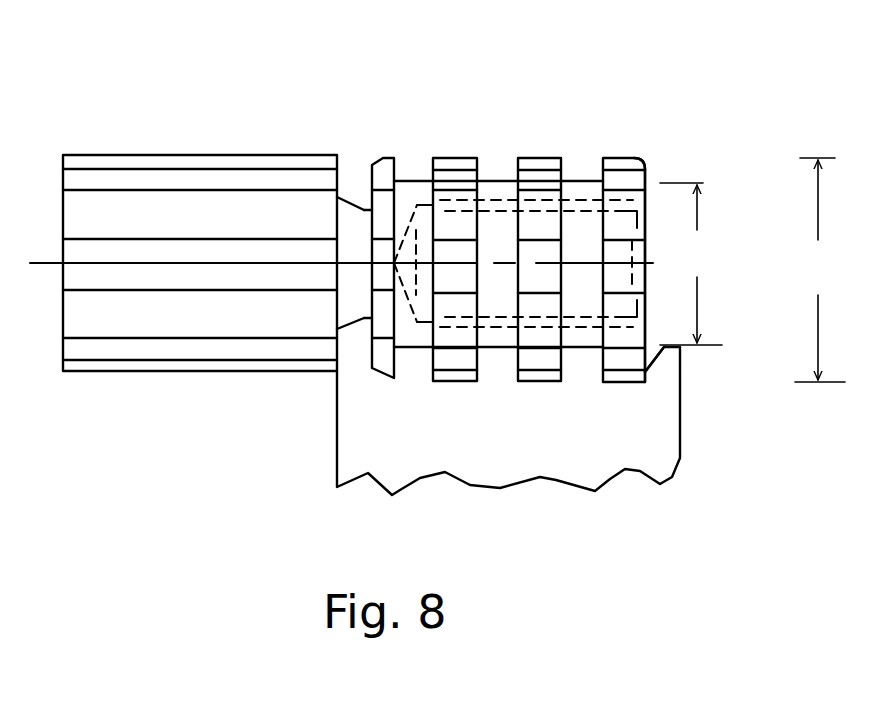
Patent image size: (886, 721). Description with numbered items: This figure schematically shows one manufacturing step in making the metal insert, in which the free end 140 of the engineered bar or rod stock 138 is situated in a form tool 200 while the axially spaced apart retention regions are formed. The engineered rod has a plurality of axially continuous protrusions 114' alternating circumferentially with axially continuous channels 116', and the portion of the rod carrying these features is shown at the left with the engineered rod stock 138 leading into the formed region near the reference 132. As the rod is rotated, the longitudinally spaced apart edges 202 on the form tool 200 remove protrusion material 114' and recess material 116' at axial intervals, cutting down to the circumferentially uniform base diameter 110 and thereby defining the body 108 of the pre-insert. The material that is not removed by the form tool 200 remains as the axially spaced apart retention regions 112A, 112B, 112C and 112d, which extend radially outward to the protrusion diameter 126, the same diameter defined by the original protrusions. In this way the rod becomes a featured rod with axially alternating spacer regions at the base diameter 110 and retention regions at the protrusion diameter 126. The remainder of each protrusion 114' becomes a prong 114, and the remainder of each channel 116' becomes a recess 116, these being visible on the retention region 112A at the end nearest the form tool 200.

The axially continuous protrusion 114' is at (200, 133).
The axially continuous channel 116' is at (200, 141).
The mating connector housing 132 is at (280, 156).
The engineered bar or rod stock 138 is at (190, 374).
The retention region 112d is at (385, 156).
The free end 140 is at (417, 108).
The retention region 112C is at (452, 157).
The body 108 is at (494, 181).
The retention region 112B is at (548, 157).
The retention region 112A is at (620, 157).
The prong 114 is at (740, 119).
The recess 116 is at (752, 241).
The base diameter 110 is at (700, 222).
The protrusion diameter 126 is at (818, 305).
The form tool 200 is at (643, 480).
The longitudinally spaced apart edge 202 is at (580, 360).